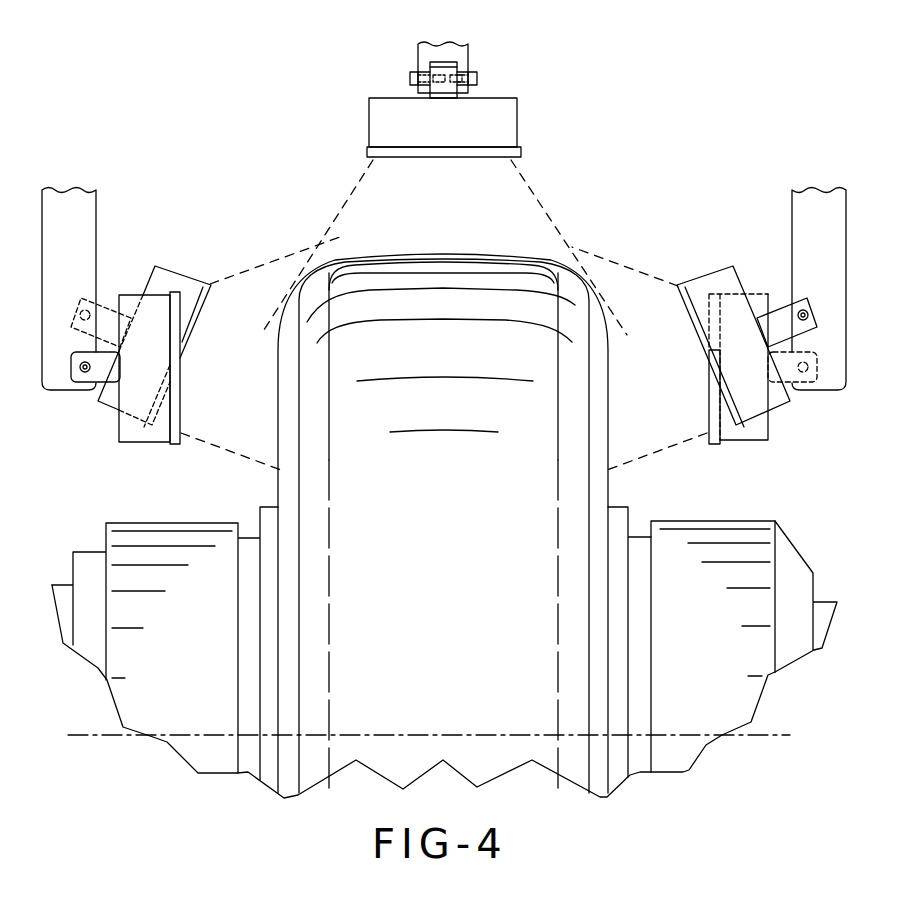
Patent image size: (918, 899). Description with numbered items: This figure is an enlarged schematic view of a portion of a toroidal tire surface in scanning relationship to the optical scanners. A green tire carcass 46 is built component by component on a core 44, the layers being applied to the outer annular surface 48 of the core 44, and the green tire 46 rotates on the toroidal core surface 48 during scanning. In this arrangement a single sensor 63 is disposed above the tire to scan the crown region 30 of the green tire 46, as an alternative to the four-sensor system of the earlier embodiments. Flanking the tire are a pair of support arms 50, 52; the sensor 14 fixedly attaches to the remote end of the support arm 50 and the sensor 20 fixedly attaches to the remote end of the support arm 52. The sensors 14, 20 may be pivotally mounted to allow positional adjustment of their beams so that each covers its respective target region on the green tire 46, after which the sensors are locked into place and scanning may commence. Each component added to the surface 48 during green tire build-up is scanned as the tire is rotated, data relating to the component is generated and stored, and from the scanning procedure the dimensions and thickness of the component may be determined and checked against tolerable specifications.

The sensor 63 is at (400, 107).
The crown region 30 is at (553, 259).
The support arm 52 is at (66, 215).
The support arm 50 is at (818, 215).
The sensor 20 is at (137, 297).
The sensor 14 is at (757, 297).
The green tire carcass 46 is at (413, 548).
The outer annular surface 48 is at (668, 557).
The core 44 is at (742, 520).